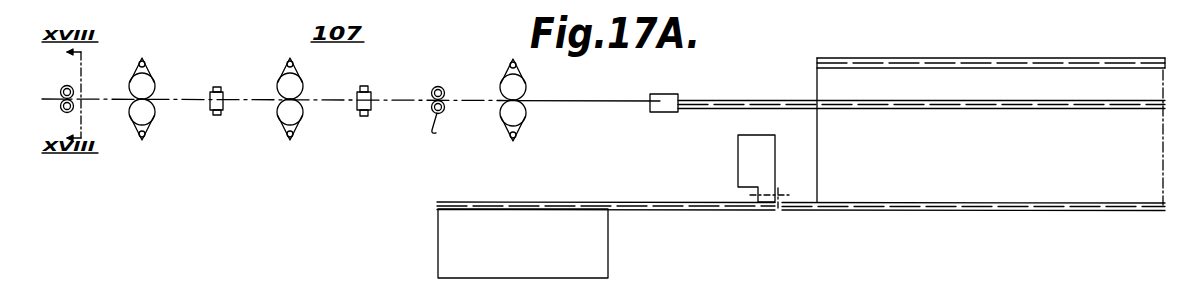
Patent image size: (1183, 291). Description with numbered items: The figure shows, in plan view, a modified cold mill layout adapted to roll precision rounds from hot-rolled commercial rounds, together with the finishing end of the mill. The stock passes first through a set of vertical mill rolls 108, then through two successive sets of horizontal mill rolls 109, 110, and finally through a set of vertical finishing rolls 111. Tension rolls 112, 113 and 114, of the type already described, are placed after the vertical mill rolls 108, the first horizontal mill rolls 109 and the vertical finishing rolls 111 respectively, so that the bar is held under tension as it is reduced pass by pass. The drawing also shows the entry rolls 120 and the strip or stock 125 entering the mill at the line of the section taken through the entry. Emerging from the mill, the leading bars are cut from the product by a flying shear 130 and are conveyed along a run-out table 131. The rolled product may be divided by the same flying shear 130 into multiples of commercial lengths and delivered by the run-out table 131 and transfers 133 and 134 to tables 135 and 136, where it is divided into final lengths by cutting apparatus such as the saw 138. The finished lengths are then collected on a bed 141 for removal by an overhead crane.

The set of vertical mill rolls 108 is at (62, 91).
The set of horizontal mill rolls 109 is at (224, 106).
The set of horizontal mill rolls 110 is at (372, 102).
The set of vertical finishing rolls 111 is at (444, 100).
The tension rolls 112 is at (145, 108).
The tension rolls 113 is at (289, 110).
The tension rolls 114 is at (520, 110).
The lower guide roll 120 is at (73, 108).
The strip 125 is at (209, 99).
The flying shear 130 is at (663, 101).
The run-out table 131 is at (767, 89).
The transfer 133 is at (902, 78).
The transfer 134 is at (938, 190).
The table 135 is at (1047, 45).
The table 136 is at (1027, 208).
The saw 138 is at (745, 160).
The bed 141 is at (590, 246).